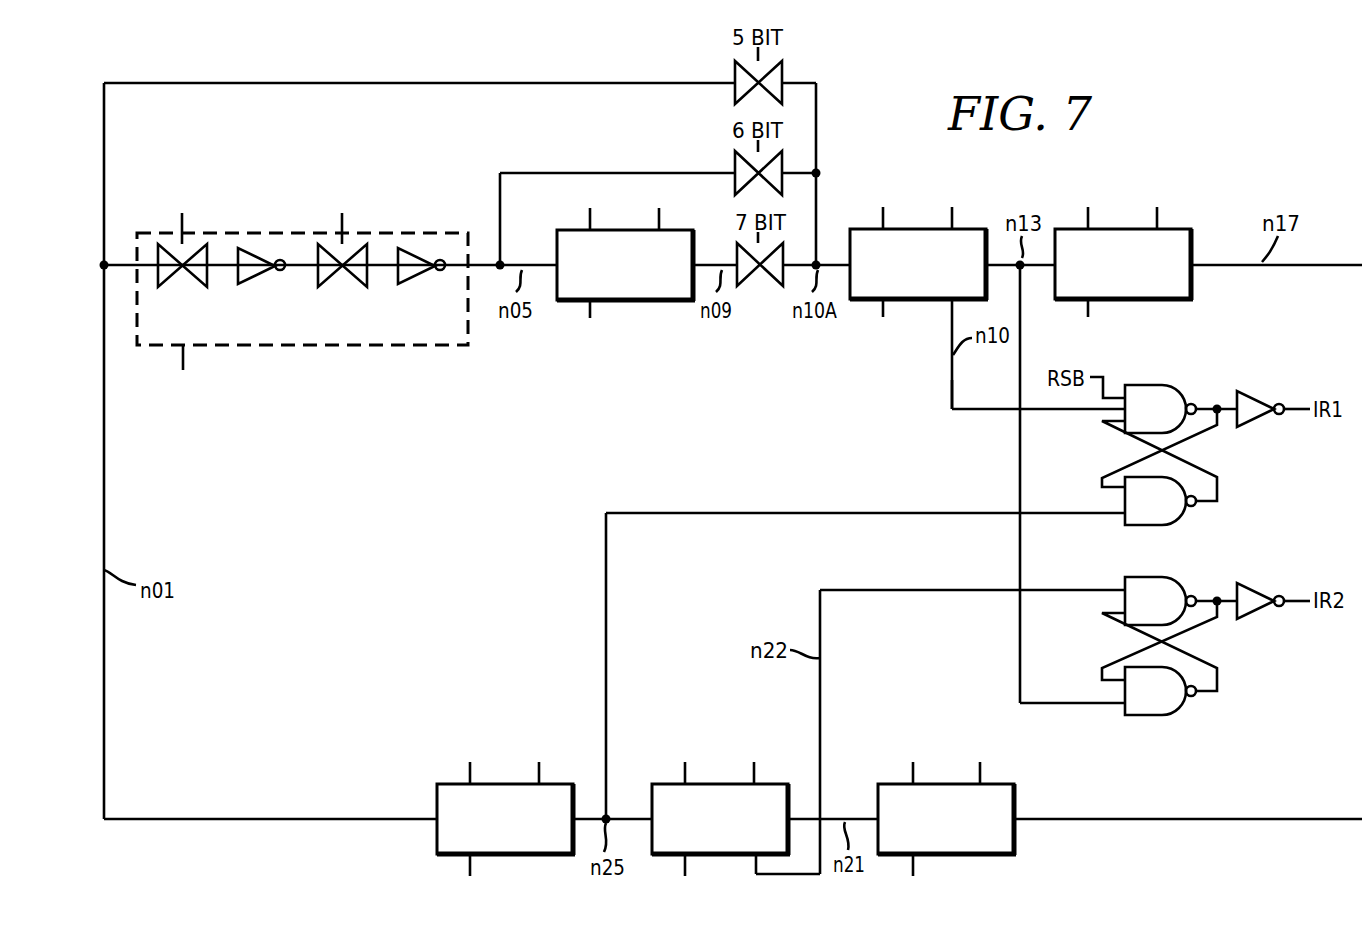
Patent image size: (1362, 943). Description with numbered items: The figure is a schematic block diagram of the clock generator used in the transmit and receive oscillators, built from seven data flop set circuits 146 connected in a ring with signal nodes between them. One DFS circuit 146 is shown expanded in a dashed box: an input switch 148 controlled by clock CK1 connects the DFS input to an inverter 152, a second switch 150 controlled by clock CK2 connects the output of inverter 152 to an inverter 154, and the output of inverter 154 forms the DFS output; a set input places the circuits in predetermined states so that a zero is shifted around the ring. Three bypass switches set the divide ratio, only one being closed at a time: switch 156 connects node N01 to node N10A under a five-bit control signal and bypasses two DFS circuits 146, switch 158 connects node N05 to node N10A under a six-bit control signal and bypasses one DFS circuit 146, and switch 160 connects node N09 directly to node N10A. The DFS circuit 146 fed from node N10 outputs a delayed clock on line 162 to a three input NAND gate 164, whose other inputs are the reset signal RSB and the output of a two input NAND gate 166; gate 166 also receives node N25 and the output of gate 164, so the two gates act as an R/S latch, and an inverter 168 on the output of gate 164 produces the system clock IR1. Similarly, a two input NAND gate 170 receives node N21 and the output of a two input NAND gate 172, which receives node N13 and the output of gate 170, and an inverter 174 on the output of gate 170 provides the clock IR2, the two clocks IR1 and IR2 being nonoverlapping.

The data flop set circuit 146 is at (273, 338).
The input switch 148 is at (160, 243).
The switch 150 is at (350, 242).
The inverter 152 is at (254, 246).
The inverter 154 is at (425, 246).
The switch 156 is at (735, 66).
The switch 158 is at (736, 160).
The switch 160 is at (766, 286).
The line 162 is at (952, 392).
The three input NAND gate 164 is at (1175, 390).
The two input NAND gate 166 is at (1130, 527).
The inverter 168 is at (1255, 393).
The two input NAND gate 170 is at (1176, 578).
The two input NAND gate 172 is at (1192, 712).
The inverter 174 is at (1256, 584).